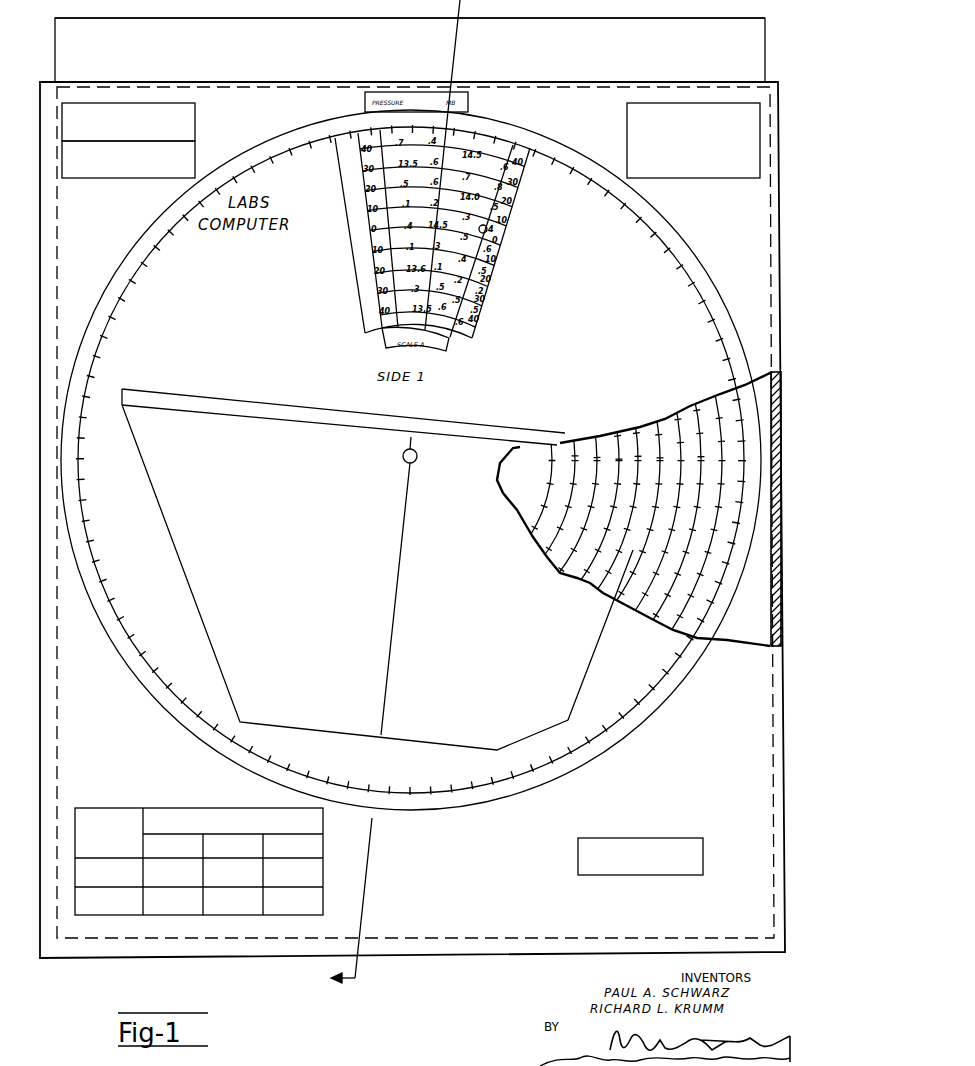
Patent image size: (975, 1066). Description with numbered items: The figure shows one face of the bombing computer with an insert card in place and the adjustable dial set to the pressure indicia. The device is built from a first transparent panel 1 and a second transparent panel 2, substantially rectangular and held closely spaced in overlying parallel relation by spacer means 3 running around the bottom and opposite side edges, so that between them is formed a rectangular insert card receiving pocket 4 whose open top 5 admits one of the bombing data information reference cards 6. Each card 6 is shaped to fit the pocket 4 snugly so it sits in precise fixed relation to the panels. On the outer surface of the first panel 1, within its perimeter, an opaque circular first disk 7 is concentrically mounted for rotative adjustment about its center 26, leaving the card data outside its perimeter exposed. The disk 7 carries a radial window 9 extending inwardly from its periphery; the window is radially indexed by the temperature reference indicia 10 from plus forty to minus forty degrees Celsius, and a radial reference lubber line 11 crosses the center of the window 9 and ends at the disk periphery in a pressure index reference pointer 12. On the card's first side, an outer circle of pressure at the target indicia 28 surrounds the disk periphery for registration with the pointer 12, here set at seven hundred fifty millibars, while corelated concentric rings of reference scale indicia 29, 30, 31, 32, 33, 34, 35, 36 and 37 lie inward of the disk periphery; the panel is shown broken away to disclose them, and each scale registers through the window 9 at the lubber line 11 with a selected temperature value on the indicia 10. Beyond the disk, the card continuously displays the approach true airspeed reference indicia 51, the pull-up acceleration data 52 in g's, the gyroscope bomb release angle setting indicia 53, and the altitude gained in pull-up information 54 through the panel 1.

The first transparent panel 1 is at (248, 94).
The second transparent panel 2 is at (756, 598).
The spacer means 3 is at (560, 493).
The insert card receiving pocket 4 is at (767, 550).
The open top 5 is at (552, 81).
The bombing data information reference card 6 is at (656, 30).
The first opaque disk 7 is at (160, 248).
The radial window 9 is at (488, 230).
The temperature reference indicia 10 is at (357, 256).
The radial reference lubber line 11 is at (445, 219).
The pressure index reference pointer 12 is at (452, 126).
The pivot 26 is at (418, 459).
The pressure at the target indicia 28 is at (677, 232).
The reference scale indicia ring 29 is at (722, 398).
The reference scale indicia ring 30 is at (702, 411).
The reference scale indicia ring 31 is at (682, 424).
The reference scale indicia ring 32 is at (661, 432).
The reference scale indicia ring 33 is at (640, 437).
The reference scale indicia ring 34 is at (620, 443).
The reference scale indicia ring 35 is at (598, 447).
The reference scale indicia ring 36 is at (576, 448).
The reference scale indicia ring 37 is at (552, 449).
The true airspeed reference indicia 51 is at (197, 118).
The pull-up acceleration data 52 is at (197, 156).
The gyroscope bomb release angle setting indicia 53 is at (634, 115).
The altitude gained in pull-up information 54 is at (668, 845).